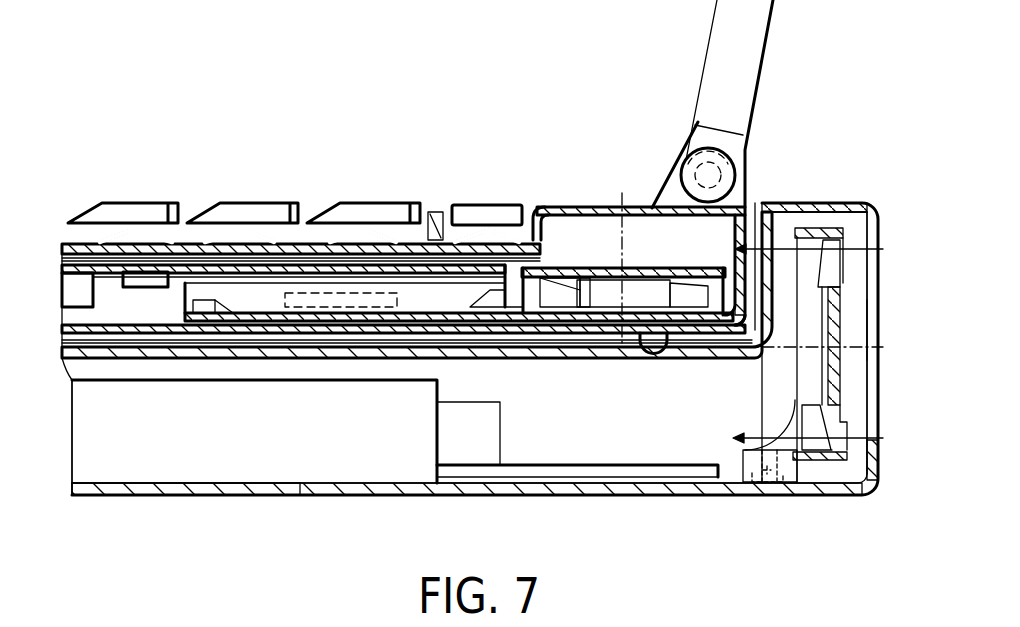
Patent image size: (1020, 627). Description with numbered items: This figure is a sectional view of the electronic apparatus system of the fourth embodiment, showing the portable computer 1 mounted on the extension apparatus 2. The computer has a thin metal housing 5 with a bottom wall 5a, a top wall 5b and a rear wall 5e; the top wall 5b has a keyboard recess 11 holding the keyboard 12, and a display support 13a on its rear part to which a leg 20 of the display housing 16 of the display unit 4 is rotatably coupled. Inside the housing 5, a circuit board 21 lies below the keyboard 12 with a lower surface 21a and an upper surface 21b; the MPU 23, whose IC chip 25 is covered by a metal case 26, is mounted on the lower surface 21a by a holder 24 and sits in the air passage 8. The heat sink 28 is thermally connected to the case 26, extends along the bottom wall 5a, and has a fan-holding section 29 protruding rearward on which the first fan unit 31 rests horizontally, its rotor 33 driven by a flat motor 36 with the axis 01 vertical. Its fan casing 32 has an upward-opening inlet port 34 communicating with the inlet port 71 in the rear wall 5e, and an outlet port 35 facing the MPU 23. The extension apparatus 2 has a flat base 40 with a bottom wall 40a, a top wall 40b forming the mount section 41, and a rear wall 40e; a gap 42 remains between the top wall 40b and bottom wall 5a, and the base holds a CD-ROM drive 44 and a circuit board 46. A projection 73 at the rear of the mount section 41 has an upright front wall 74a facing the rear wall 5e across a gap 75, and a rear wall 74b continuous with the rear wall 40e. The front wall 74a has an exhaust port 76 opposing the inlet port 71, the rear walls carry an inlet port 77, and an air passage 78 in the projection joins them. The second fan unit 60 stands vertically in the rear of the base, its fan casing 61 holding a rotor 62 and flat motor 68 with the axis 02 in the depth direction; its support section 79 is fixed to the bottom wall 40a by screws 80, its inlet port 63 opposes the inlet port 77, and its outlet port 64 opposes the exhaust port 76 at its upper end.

The portable computer 1 is at (116, 194).
The extension apparatus 2 is at (135, 498).
The display unit 4 is at (711, 33).
The housing 5 is at (645, 207).
The bottom wall 5a is at (556, 345).
The top wall 5b is at (571, 208).
The rear wall 5e is at (750, 340).
The air passage 8 is at (123, 308).
The keyboard recess 11 is at (512, 222).
The keyboard 12 is at (358, 208).
The display support 13a is at (669, 168).
The display housing 16 is at (769, 30).
The leg 20 is at (733, 143).
The circuit board 21 is at (104, 268).
The lower surface 21a is at (147, 288).
The upper surface 21b is at (152, 262).
The MPU 23 is at (253, 290).
The holder 24 is at (330, 268).
The IC chip 25 is at (370, 296).
The case 26 is at (277, 290).
The heat sink 28 is at (330, 342).
The fan-holding section 29 is at (616, 333).
The first fan unit 31 is at (688, 332).
The fan casing 32 is at (717, 340).
The rotor 33 is at (653, 332).
The inlet port 34 is at (688, 267).
The outlet port 35 is at (517, 333).
The flat motor 36 is at (638, 278).
The base 40 is at (672, 493).
The bottom wall 40a is at (297, 496).
The top wall 40b is at (98, 357).
The rear wall 40e is at (872, 415).
The mount section 41 is at (400, 345).
The gap 42 is at (230, 340).
The CD-ROM drive 44 is at (216, 467).
The circuit board 46 is at (613, 470).
The second fan unit 60 is at (822, 384).
The fan casing 61 is at (832, 482).
The rotor 62 is at (830, 304).
The inlet port 63 is at (833, 278).
The outlet port 64 is at (793, 276).
The flat motor 68 is at (838, 393).
The inlet port 71 is at (754, 243).
The projection 73 is at (820, 207).
The front wall 74a is at (773, 365).
The rear wall 74b is at (880, 227).
The gap 75 is at (733, 268).
The exhaust port 76 is at (783, 215).
The inlet port 77 is at (873, 320).
The air passage 78 is at (850, 228).
The support section 79 is at (788, 452).
The screws 80 is at (763, 490).
The axis 01 is at (616, 255).
The axis 02 is at (826, 349).